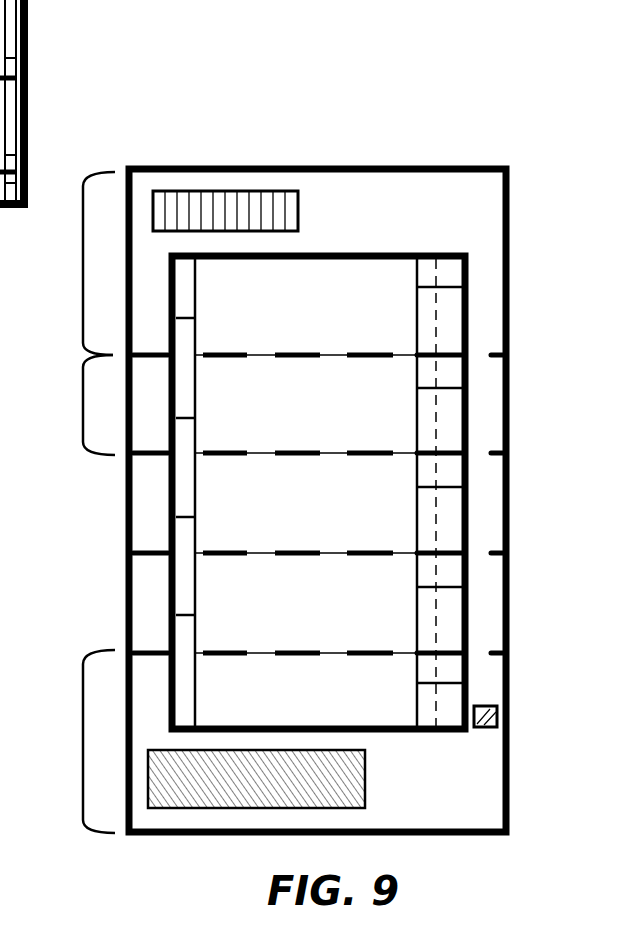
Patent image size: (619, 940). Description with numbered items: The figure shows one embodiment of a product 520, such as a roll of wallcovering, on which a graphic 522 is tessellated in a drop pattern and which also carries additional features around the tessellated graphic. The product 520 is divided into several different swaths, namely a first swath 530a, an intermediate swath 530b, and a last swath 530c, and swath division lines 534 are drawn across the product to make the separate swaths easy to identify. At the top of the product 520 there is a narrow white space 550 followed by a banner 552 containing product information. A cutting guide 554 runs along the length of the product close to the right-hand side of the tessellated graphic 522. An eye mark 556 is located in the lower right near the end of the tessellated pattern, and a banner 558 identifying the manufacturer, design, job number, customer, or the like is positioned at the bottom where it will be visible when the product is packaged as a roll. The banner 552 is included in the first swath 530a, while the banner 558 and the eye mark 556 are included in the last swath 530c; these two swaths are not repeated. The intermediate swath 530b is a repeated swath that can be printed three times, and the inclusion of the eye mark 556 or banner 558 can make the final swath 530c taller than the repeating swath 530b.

The product 520 is at (75, 98).
The narrow white space 550 is at (442, 190).
The banner 552 is at (238, 188).
The graphic 522 is at (332, 292).
The cutting guide 554 is at (438, 318).
The swath division lines 534 is at (218, 456).
The eye mark 556 is at (498, 706).
The banner 558 is at (201, 810).
The first swath 530a is at (83, 262).
The intermediate swath 530b is at (83, 405).
The last swath 530c is at (83, 742).